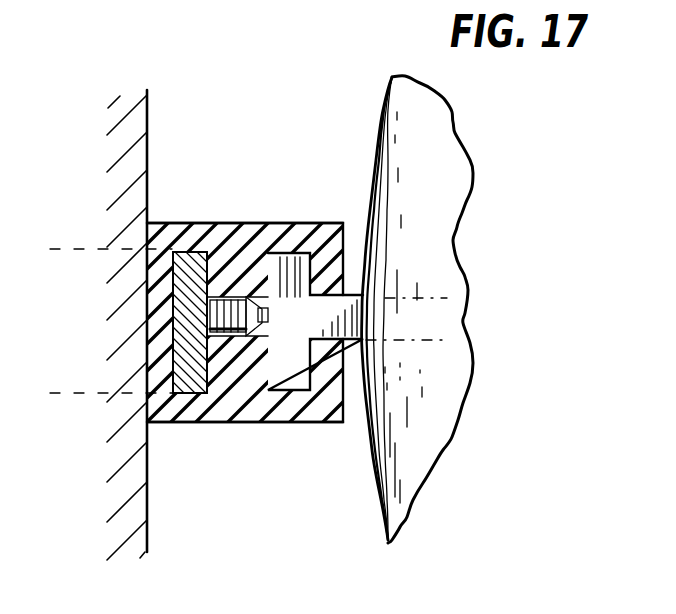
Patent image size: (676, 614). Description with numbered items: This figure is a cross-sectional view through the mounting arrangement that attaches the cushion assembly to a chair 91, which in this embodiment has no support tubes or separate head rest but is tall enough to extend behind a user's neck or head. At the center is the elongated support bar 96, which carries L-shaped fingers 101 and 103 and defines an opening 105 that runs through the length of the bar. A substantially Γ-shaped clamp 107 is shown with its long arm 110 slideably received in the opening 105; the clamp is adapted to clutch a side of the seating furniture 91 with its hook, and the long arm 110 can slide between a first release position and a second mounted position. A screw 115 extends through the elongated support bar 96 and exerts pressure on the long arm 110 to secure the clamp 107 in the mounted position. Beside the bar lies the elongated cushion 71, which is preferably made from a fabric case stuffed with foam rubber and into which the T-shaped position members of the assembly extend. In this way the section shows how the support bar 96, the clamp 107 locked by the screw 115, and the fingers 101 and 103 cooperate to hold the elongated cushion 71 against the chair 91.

The chair 91 is at (142, 104).
The elongated cushion 71 is at (437, 121).
The opening 105 is at (240, 262).
The elongated support bar 96 is at (248, 262).
The L-shaped finger 101 is at (300, 243).
The Γ-shaped clamp 107 is at (183, 363).
The long arm 110 is at (173, 378).
The screw 115 is at (228, 337).
The L-shaped finger 103 is at (290, 403).